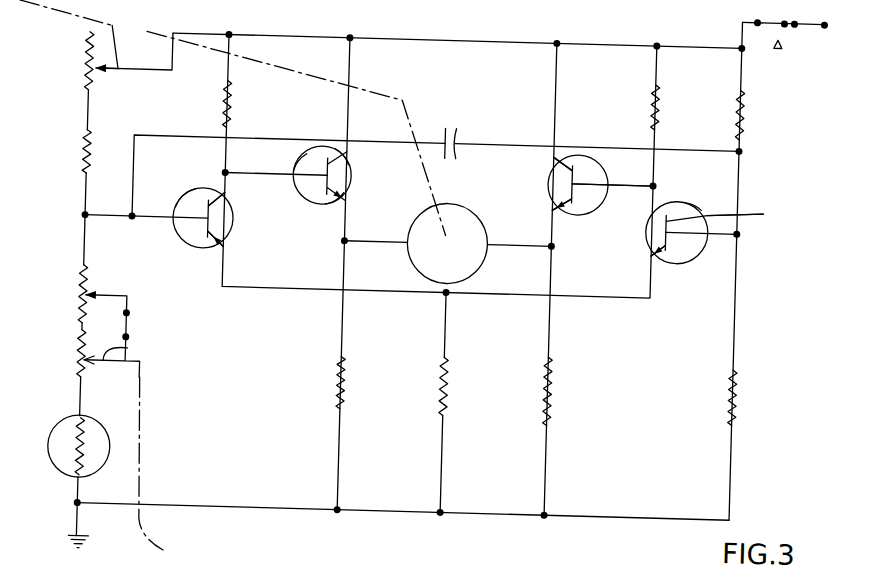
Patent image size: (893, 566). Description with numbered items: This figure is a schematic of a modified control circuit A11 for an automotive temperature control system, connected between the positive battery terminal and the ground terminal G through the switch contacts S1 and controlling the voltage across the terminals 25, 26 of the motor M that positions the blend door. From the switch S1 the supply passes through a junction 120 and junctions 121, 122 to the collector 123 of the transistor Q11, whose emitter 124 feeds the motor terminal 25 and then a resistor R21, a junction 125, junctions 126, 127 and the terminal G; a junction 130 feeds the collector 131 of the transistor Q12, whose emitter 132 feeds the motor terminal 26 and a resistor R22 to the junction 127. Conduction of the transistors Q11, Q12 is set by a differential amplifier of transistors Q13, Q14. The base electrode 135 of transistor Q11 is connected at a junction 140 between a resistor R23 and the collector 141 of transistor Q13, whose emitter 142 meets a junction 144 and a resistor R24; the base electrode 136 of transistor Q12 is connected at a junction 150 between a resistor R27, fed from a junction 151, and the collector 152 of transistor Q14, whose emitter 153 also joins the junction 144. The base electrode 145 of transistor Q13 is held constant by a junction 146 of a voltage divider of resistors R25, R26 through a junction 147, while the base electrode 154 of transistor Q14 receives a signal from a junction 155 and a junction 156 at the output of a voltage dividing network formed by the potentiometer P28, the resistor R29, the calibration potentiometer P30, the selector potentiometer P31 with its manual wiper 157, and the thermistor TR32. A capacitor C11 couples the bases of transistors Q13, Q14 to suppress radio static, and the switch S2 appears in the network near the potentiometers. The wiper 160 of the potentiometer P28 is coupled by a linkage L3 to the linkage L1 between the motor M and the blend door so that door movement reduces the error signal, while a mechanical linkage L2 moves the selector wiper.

The control circuit A11 is at (435, 30).
The linkage L3 is at (123, 36).
The linkage L1 is at (296, 132).
The mechanical linkage L2 is at (184, 536).
The potentiometer P28 is at (88, 72).
The wiper 160 is at (101, 75).
The resistor R29 is at (86, 166).
The junction 155 is at (86, 217).
The junction 156 is at (132, 219).
The calibration potentiometer P30 is at (88, 288).
The switch S2 is at (138, 332).
The potentiometer P31 is at (88, 372).
The wiper 157 is at (140, 351).
The thermistor TR32 is at (62, 432).
The ground terminal G is at (94, 527).
The junction 151 is at (231, 31).
The resistor R27 is at (234, 103).
The junction 150 is at (226, 170).
The transistor Q14 is at (196, 246).
The base electrode 154 is at (180, 207).
The collector 152 is at (232, 203).
The emitter 153 is at (240, 232).
The transistor Q12 is at (356, 168).
The base electrode 136 is at (297, 168).
The collector 131 is at (338, 144).
The emitter 132 is at (330, 200).
The motor terminal 26 is at (347, 238).
The junction 130 is at (351, 31).
The capacitor C11 is at (452, 130).
The motor M is at (447, 243).
The junction 144 is at (456, 288).
The junction 122 is at (558, 31).
The motor terminal 25 is at (562, 236).
The transistor Q11 is at (556, 166).
The collector 123 is at (561, 146).
The emitter 124 is at (580, 205).
The base electrode 135 is at (600, 172).
The junction 140 is at (660, 172).
The junction 121 is at (658, 31).
The resistor R23 is at (661, 100).
The transistor Q13 is at (686, 250).
The collector 141 is at (706, 196).
The emitter 142 is at (670, 243).
The base electrode 145 is at (747, 204).
The junction 146 is at (744, 220).
The junction 147 is at (745, 137).
The resistor R25 is at (746, 99).
The junction 120 is at (744, 34).
The switch contacts S1 is at (766, 6).
The resistor R22 is at (354, 386).
The resistor R24 is at (458, 384).
The resistor R21 is at (562, 381).
The resistor R26 is at (746, 375).
The junction 127 is at (352, 508).
The junction 126 is at (454, 508).
The junction 125 is at (558, 508).